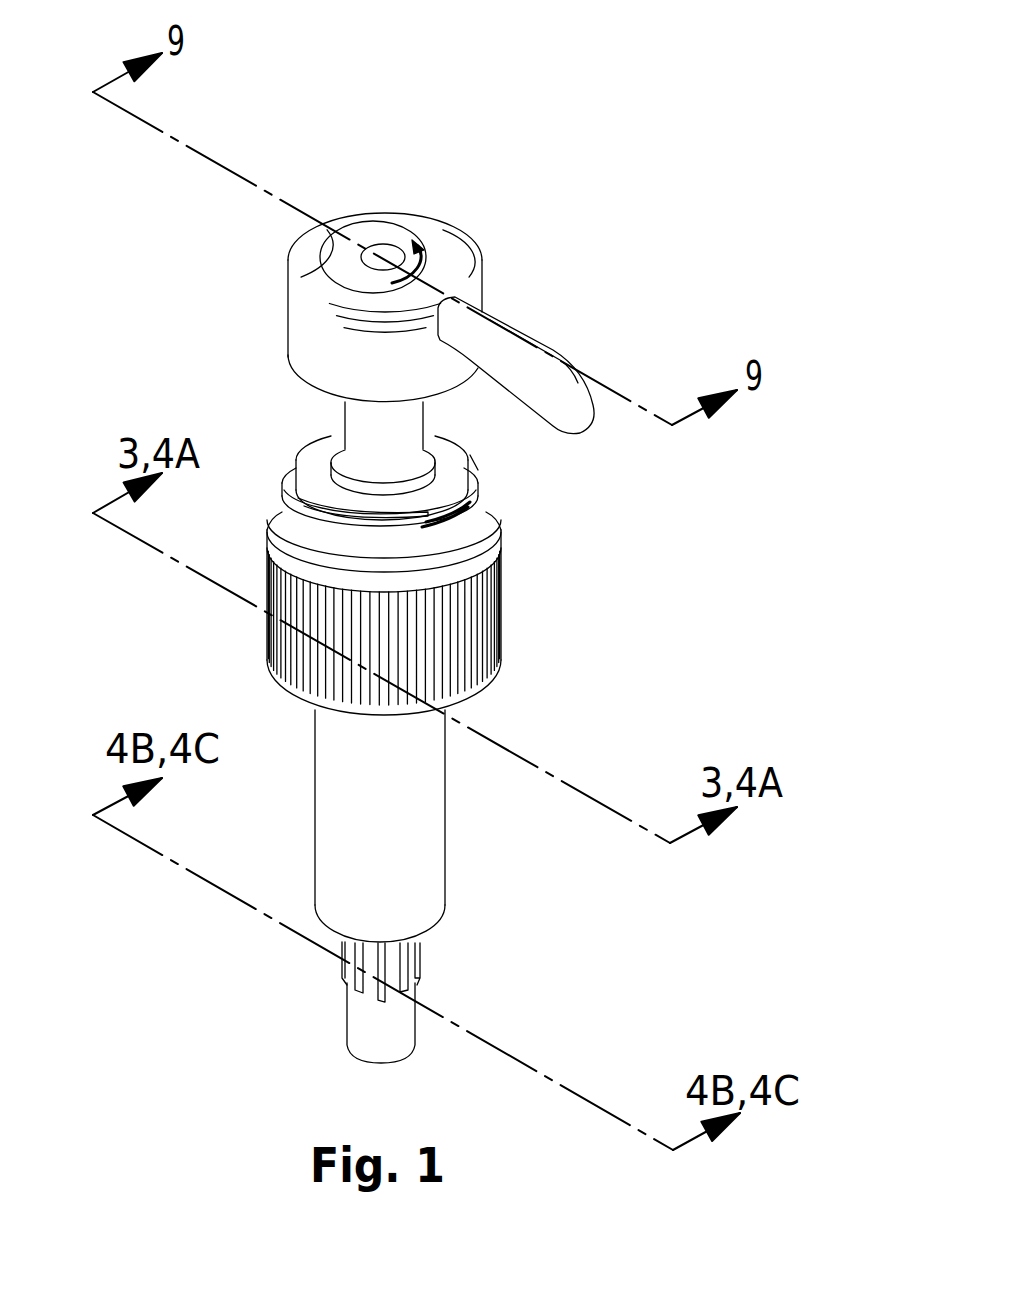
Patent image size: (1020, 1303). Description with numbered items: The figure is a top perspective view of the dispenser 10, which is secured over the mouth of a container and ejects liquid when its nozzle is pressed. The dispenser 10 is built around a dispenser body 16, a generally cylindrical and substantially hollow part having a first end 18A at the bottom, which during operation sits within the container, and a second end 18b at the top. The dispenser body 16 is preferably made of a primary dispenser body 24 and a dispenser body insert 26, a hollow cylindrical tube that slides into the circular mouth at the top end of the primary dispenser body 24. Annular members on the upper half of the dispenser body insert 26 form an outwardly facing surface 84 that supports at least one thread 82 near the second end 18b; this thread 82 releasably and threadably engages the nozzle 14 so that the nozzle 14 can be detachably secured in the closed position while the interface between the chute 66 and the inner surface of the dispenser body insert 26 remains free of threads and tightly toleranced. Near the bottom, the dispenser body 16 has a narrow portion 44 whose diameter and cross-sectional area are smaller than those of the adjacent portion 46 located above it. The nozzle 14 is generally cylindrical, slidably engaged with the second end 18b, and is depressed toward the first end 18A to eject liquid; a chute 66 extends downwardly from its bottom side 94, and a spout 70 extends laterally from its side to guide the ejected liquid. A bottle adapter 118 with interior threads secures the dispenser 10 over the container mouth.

The dispenser 10 is at (440, 200).
The nozzle 14 is at (365, 218).
The dispenser body 16 is at (490, 505).
The first end 18A is at (400, 1043).
The second end 18b is at (475, 452).
The primary dispenser body 24 is at (423, 797).
The dispenser body insert 26 is at (320, 445).
The narrow portion 44 is at (415, 992).
The adjacent portion 46 is at (430, 912).
The chute 66 is at (407, 448).
The spout 70 is at (503, 322).
The thread 82 is at (297, 462).
The outwardly facing surface 84 is at (307, 517).
The bottom side 94 is at (337, 397).
The bottle adapter 118 is at (470, 690).